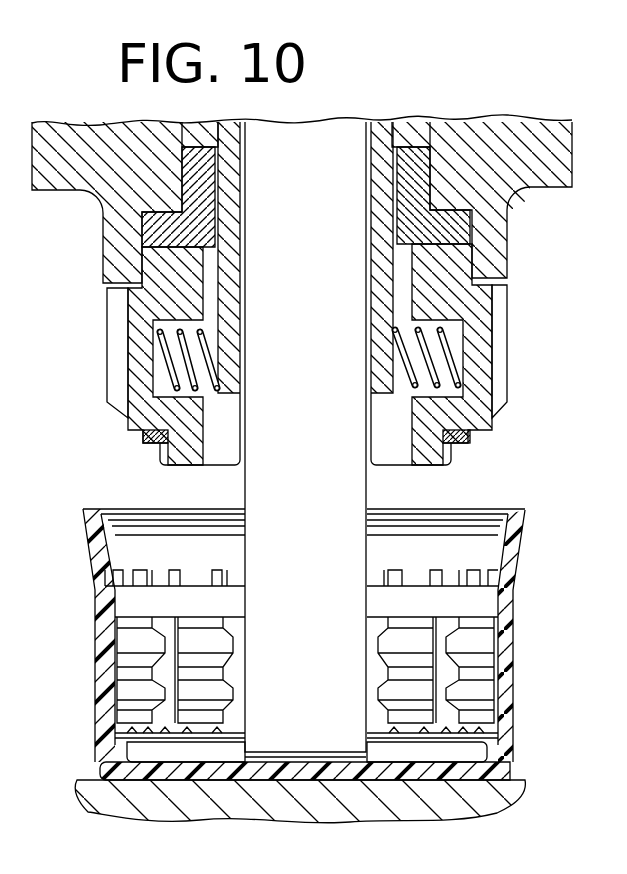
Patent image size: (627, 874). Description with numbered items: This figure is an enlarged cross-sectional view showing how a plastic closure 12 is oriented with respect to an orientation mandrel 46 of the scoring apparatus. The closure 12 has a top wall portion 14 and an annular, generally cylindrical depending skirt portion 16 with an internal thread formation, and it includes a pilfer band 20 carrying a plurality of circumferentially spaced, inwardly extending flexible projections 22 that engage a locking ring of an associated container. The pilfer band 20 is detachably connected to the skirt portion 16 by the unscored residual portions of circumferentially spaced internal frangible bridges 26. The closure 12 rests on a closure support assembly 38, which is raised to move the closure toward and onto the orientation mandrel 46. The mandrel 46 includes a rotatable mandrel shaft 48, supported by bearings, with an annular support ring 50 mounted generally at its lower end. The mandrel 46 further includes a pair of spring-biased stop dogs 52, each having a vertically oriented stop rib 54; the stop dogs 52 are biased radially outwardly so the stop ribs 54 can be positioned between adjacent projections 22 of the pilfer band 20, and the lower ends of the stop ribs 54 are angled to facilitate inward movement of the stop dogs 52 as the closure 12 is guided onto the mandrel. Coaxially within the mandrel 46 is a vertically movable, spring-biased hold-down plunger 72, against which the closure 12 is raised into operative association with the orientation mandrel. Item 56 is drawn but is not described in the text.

The plastic closure 12 is at (303, 616).
The top wall portion 14 is at (172, 770).
The skirt portion 16 is at (503, 656).
The pilfer band 20 is at (97, 541).
The flexible projections 22 is at (122, 545).
The frangible bridges 26 is at (213, 578).
The closure support assembly 38 is at (490, 794).
The orientation mandrel 46 is at (94, 283).
The mandrel shaft 48 is at (388, 128).
The support ring 50 is at (80, 175).
The stop dogs 52 is at (137, 414).
The stop rib 54 is at (118, 348).
The canted coil spring 56 is at (216, 387).
The hold-down plunger 72 is at (310, 663).